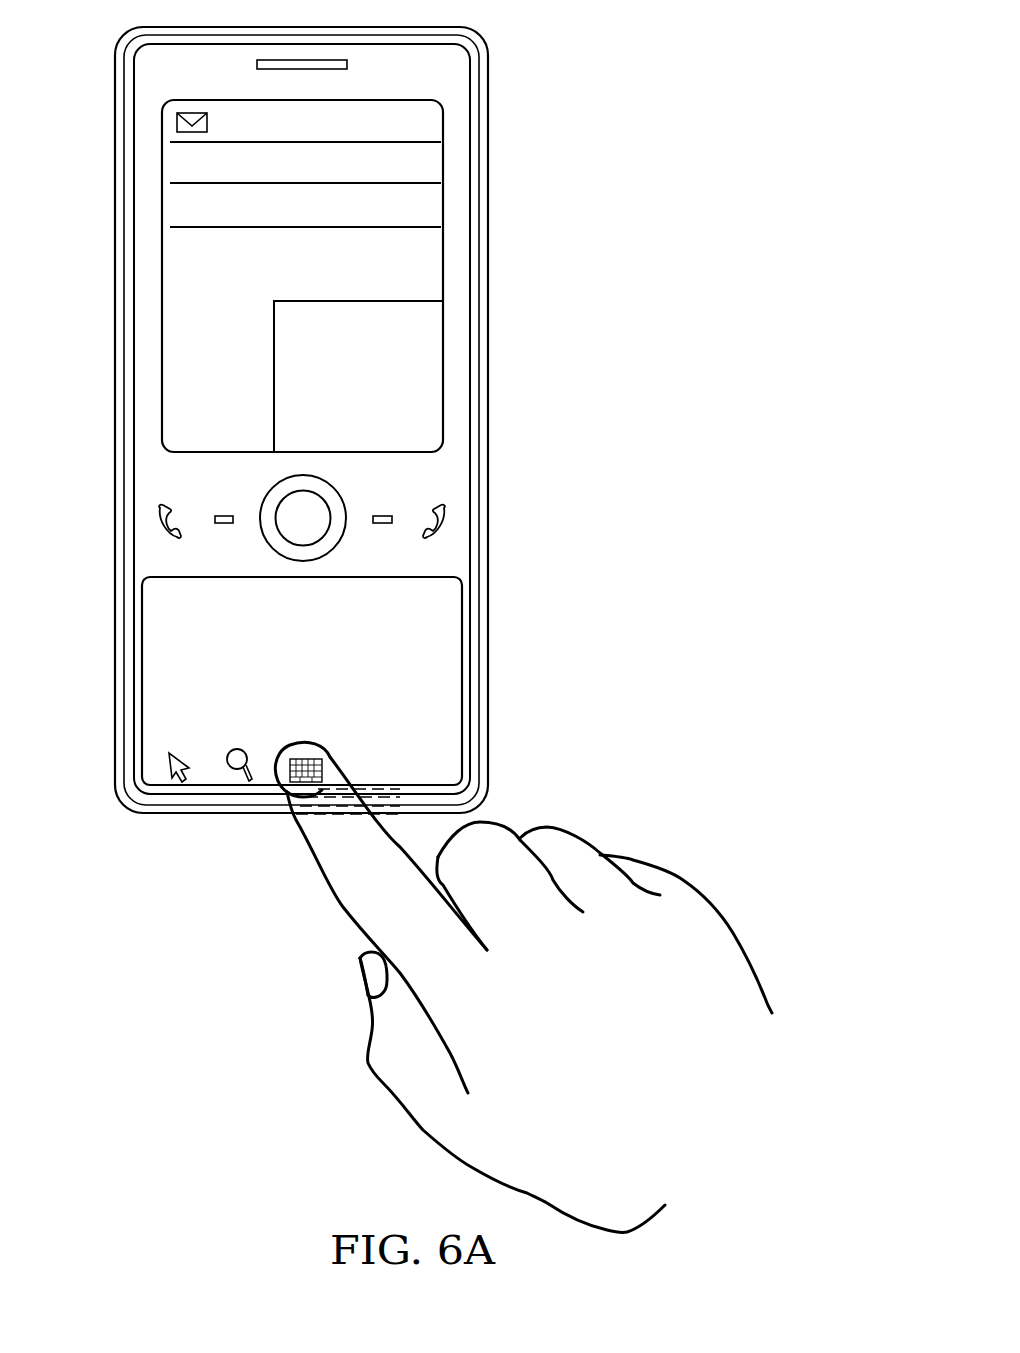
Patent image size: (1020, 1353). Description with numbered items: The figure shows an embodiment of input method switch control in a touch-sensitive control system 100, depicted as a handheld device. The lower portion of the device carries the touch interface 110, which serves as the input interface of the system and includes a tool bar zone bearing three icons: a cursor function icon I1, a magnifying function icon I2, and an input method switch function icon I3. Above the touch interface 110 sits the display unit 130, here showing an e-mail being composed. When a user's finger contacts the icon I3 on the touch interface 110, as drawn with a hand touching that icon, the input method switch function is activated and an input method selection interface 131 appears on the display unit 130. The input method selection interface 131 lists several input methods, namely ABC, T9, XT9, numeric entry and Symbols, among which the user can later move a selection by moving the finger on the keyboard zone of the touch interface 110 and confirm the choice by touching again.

The touch-sensitive control system 100 is at (488, 72).
The touch interface 110 is at (462, 612).
The display unit 130 is at (443, 240).
The input method selection interface 131 is at (427, 301).
The cursor function icon I1 is at (176, 762).
The magnifying function icon I2 is at (228, 775).
The input method switch function icon I3 is at (305, 790).